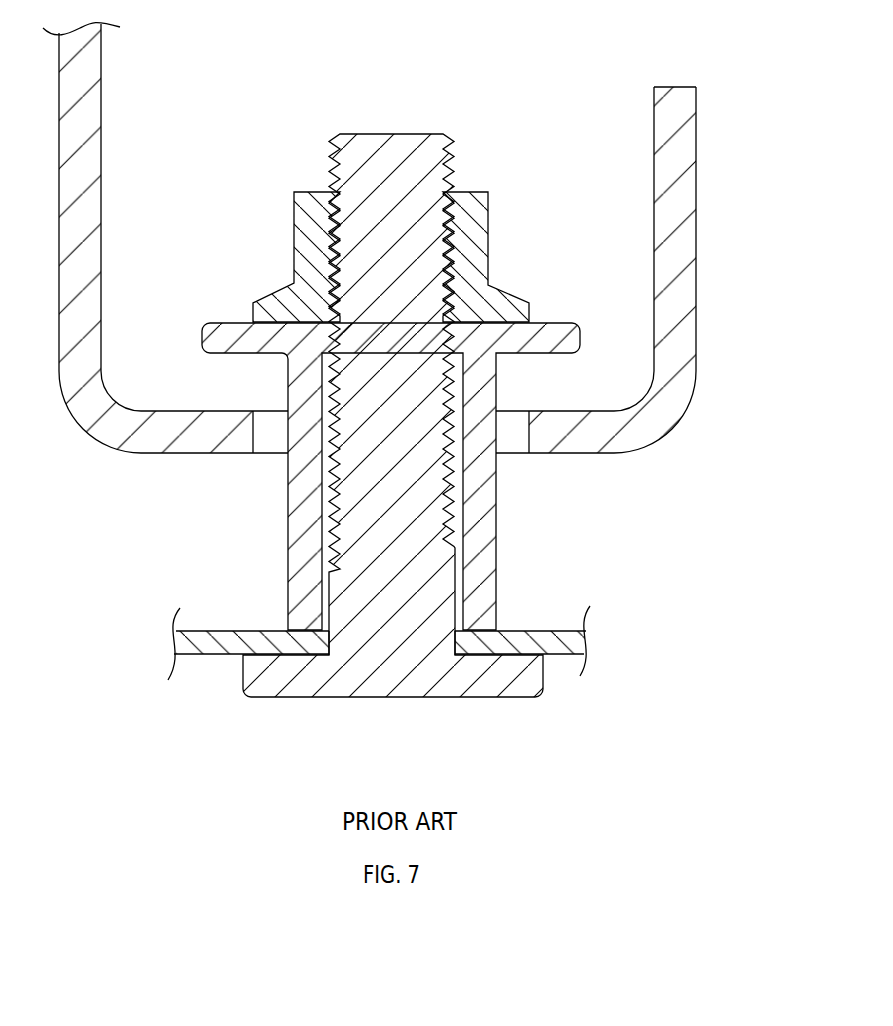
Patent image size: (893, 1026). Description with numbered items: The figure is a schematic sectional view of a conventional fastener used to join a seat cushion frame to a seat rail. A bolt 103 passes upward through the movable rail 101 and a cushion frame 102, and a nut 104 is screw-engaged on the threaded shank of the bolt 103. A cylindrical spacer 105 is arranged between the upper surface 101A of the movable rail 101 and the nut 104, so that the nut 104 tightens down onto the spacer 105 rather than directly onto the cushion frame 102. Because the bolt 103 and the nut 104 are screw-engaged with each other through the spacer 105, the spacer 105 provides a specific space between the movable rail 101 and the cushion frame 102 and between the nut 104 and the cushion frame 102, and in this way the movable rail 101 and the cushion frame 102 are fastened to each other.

The movable rail 101 is at (587, 642).
The upper surface of the movable rail 101A is at (534, 628).
The cushion frame 102 is at (687, 142).
The bolt 103 is at (372, 697).
The nut 104 is at (478, 207).
The cylindrical spacer 105 is at (540, 324).